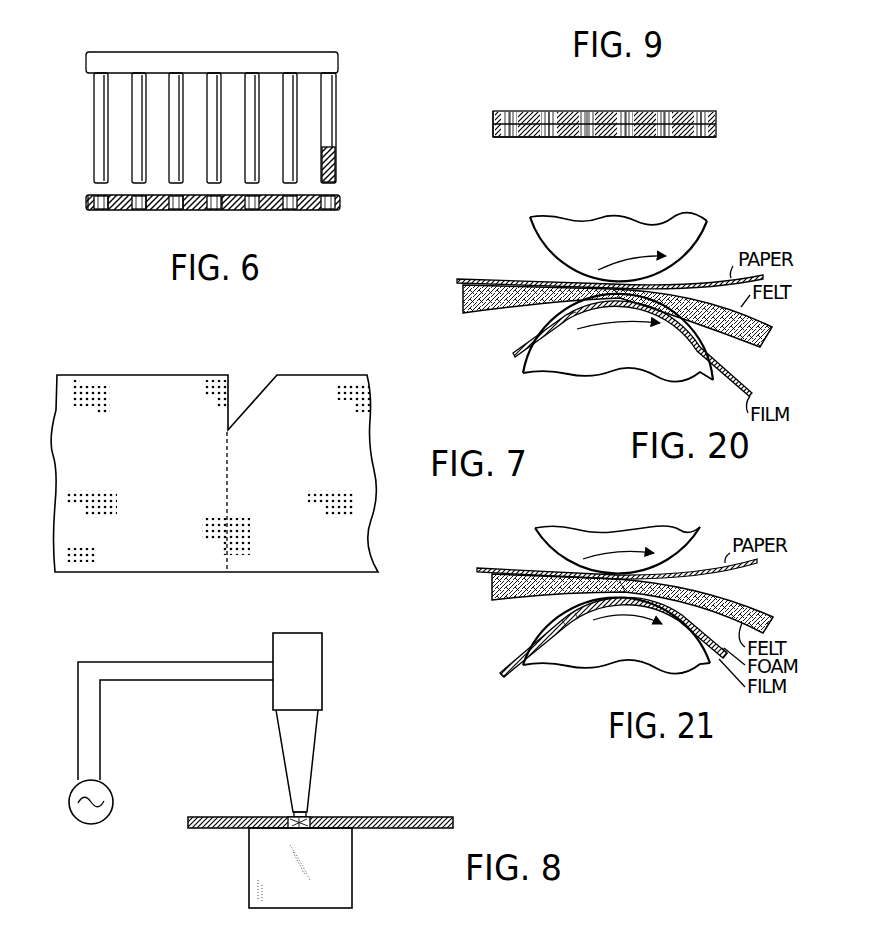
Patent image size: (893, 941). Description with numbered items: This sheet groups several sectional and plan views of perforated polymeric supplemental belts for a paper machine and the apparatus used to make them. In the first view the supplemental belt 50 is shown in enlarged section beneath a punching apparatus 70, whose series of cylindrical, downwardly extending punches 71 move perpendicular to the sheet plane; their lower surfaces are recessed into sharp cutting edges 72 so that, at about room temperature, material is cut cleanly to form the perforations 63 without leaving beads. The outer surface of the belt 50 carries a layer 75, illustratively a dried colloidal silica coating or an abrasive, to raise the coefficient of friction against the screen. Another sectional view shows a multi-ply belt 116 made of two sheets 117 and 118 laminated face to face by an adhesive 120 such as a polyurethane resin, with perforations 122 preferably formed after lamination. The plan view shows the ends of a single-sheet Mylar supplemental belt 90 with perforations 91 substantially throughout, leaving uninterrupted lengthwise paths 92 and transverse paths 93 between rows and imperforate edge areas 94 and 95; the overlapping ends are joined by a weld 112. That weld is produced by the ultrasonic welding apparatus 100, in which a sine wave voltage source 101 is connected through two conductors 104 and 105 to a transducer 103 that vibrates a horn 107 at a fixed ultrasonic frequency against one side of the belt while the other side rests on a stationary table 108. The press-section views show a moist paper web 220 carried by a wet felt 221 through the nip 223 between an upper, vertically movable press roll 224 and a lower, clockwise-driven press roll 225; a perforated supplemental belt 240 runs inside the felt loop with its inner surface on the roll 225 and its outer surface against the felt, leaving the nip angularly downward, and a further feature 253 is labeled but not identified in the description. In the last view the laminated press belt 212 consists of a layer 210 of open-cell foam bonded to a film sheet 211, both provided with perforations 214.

In FIG. 6, the punching apparatus 70 is at (340, 58).
In FIG. 6, the punches 71 is at (337, 119).
In FIG. 6, the cutting edges 72 is at (290, 182).
In FIG. 6, the layer 75 is at (87, 198).
In FIG. 6, the supplemental belt 50 is at (340, 203).
In FIG. 6, the perforations 63 is at (222, 211).
In FIG. 9, the multi-ply belt 116 is at (718, 113).
In FIG. 9, the sheet 117 is at (493, 118).
In FIG. 9, the sheet 118 is at (521, 135).
In FIG. 9, the adhesive 120 is at (601, 112).
In FIG. 9, the perforations 122 is at (545, 112).
In FIG. 7, the supplemental belt 90 is at (374, 408).
In FIG. 8, the supplemental belt 90 is at (457, 811).
In FIG. 7, the perforations 91 is at (339, 384).
In FIG. 8, the perforations 91 is at (223, 830).
In FIG. 7, the lengthwise paths 92 is at (345, 503).
In FIG. 7, the transverse paths 93 is at (237, 543).
In FIG. 7, the imperforate area 94 is at (73, 378).
In FIG. 7, the imperforate area 95 is at (78, 568).
In FIG. 7, the weld 112 is at (223, 560).
In FIG. 8, the weld 112 is at (290, 813).
In FIG. 8, the ultrasonic welding apparatus 100 is at (325, 667).
In FIG. 8, the sine wave voltage source 101 is at (69, 803).
In FIG. 8, the transducer 103 is at (273, 699).
In FIG. 8, the conductor 104 is at (160, 662).
In FIG. 8, the conductor 105 is at (218, 680).
In FIG. 8, the horn 107 is at (302, 812).
In FIG. 8, the stationary table 108 is at (352, 877).
In FIG. 20, the moist paper web 220 is at (477, 279).
In FIG. 21, the moist paper web 220 is at (480, 568).
In FIG. 20, the wet felt 221 is at (486, 313).
In FIG. 21, the wet felt 221 is at (742, 585).
In FIG. 20, the nip 223 is at (578, 281).
In FIG. 21, the nip 223 is at (578, 571).
In FIG. 20, the press roll 224 is at (697, 233).
In FIG. 21, the press roll 224 is at (700, 528).
In FIG. 20, the press roll 225 is at (637, 373).
In FIG. 21, the press roll 225 is at (630, 663).
In FIG. 20, the supplemental belt 240 is at (512, 362).
In FIG. 20, the film surface 253 is at (566, 311).
In FIG. 21, the layer of open-cell plastic foam 210 is at (528, 641).
In FIG. 21, the sheet 211 is at (509, 678).
In FIG. 21, the supplemental belt 212 is at (495, 682).
In FIG. 21, the perforations 214 is at (580, 604).